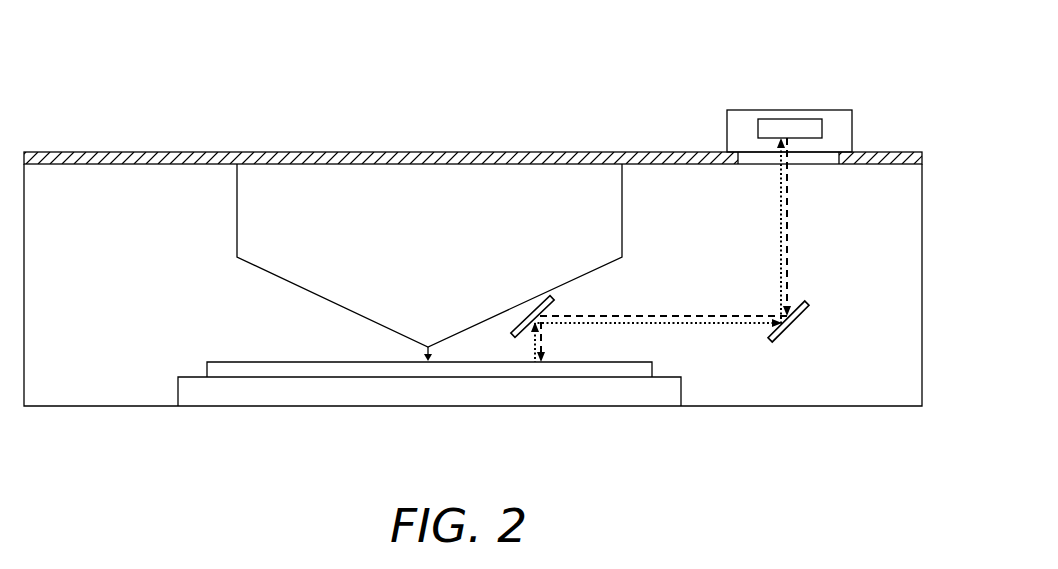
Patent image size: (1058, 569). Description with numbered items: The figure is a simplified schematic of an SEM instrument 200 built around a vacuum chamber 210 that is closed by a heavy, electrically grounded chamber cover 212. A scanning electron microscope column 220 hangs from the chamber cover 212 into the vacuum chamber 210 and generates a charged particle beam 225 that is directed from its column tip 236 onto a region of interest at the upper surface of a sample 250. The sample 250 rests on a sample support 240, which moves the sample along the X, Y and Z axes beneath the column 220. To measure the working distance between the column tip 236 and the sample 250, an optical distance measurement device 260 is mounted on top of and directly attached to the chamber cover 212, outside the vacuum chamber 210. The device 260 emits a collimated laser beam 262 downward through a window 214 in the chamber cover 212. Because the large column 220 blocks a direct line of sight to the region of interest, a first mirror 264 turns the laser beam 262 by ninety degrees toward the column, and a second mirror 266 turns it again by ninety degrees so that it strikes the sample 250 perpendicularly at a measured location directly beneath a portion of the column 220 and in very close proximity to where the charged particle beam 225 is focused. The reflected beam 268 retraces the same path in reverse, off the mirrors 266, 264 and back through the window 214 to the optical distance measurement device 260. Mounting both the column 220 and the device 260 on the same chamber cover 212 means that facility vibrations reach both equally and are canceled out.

The SEM instrument 200 is at (242, 66).
The vacuum chamber 210 is at (473, 285).
The chamber cover 212 is at (47, 153).
The window 214 is at (806, 165).
The scanning electron microscope column 220 is at (434, 185).
The charged particle beam 225 is at (420, 356).
The column tip 236 is at (428, 332).
The sample support 240 is at (429, 391).
The sample 250 is at (206, 367).
The optical distance measurement device 260 is at (838, 111).
The laser beam 262 is at (787, 278).
The mirror 264 is at (790, 330).
The mirror 266 is at (552, 302).
The reflected beam 268 is at (778, 220).